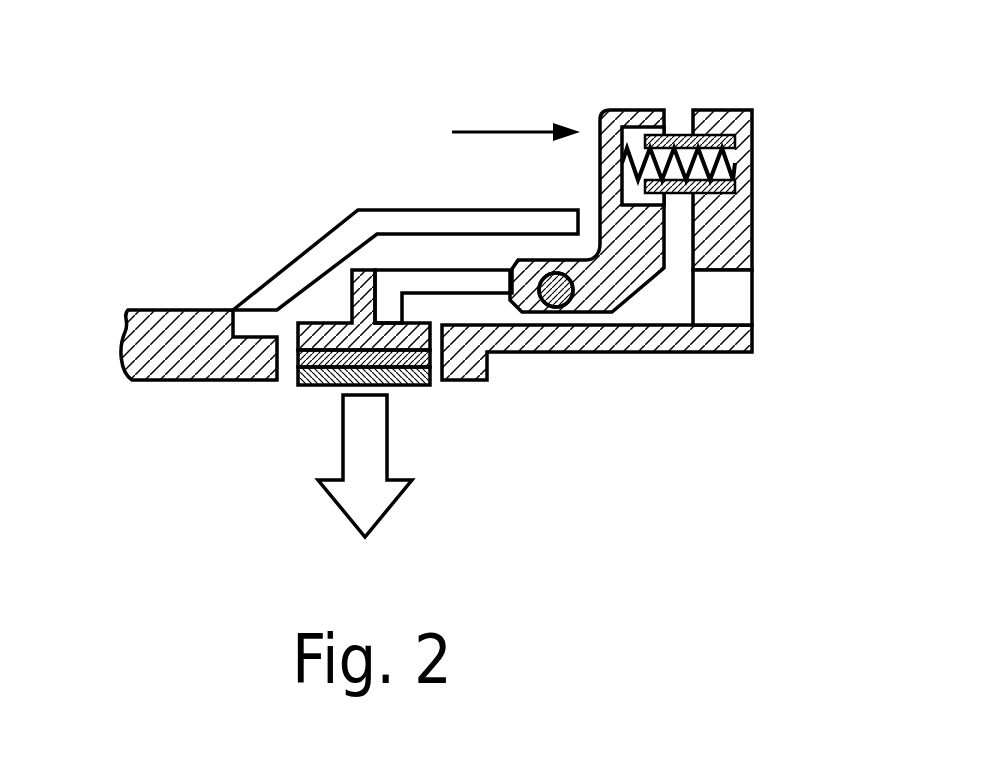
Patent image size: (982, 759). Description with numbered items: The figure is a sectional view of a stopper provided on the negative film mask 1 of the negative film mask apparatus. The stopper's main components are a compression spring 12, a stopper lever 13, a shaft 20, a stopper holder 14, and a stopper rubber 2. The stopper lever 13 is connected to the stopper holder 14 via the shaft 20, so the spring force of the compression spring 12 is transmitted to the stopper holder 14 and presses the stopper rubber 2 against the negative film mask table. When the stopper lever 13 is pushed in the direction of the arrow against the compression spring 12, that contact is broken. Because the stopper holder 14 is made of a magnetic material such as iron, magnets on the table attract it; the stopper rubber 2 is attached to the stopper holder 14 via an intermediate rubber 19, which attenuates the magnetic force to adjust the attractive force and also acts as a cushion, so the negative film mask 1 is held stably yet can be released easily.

The negative film mask 1 is at (163, 309).
The stopper rubber 2 is at (412, 388).
The compression spring 12 is at (735, 163).
The stopper lever 13 is at (627, 108).
The stopper holder 14 is at (333, 331).
The intermediate rubber 19 is at (303, 383).
The shaft 20 is at (573, 307).